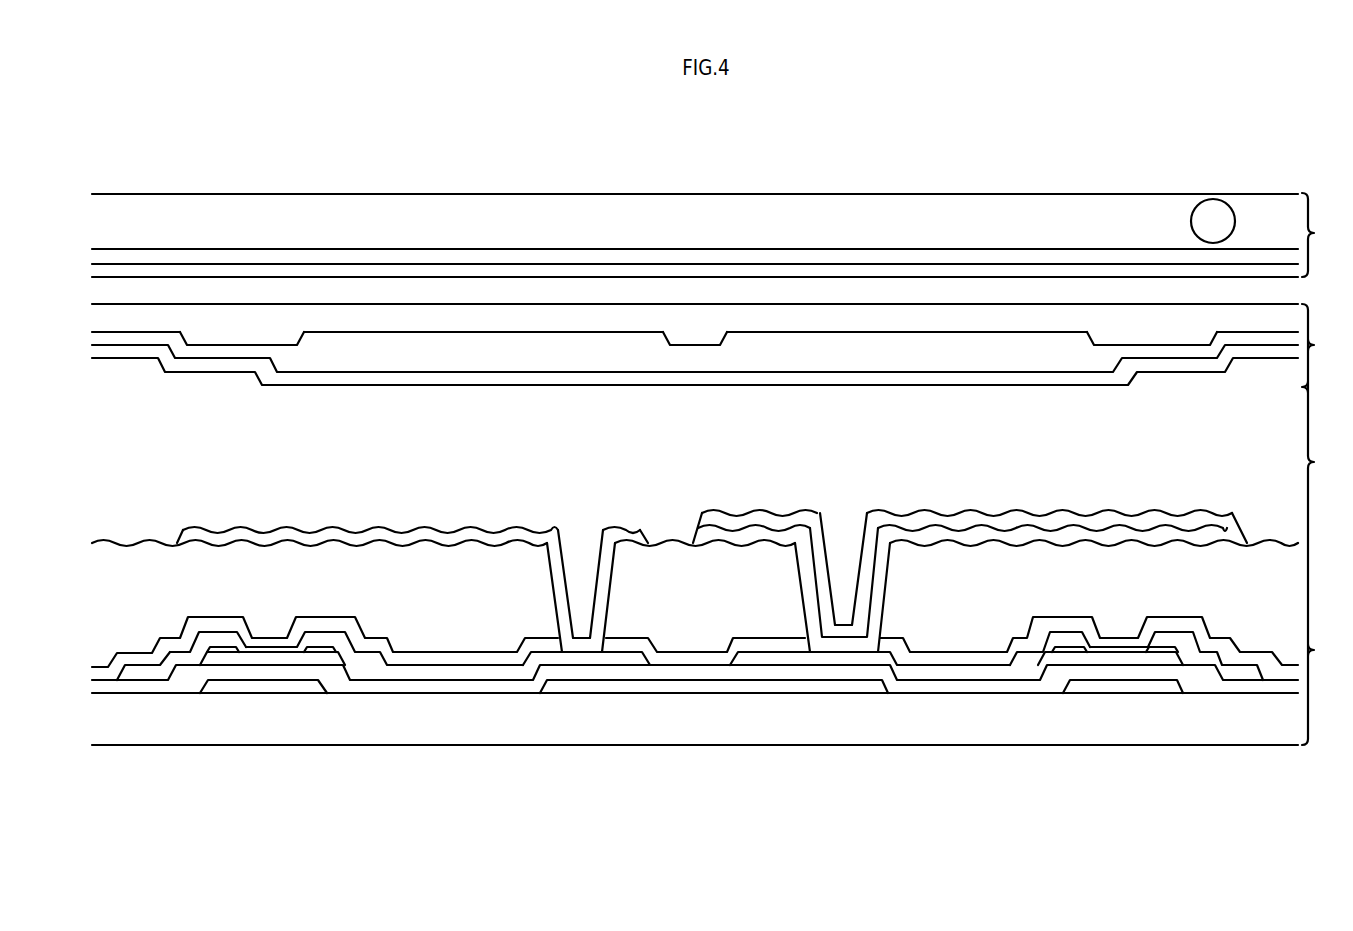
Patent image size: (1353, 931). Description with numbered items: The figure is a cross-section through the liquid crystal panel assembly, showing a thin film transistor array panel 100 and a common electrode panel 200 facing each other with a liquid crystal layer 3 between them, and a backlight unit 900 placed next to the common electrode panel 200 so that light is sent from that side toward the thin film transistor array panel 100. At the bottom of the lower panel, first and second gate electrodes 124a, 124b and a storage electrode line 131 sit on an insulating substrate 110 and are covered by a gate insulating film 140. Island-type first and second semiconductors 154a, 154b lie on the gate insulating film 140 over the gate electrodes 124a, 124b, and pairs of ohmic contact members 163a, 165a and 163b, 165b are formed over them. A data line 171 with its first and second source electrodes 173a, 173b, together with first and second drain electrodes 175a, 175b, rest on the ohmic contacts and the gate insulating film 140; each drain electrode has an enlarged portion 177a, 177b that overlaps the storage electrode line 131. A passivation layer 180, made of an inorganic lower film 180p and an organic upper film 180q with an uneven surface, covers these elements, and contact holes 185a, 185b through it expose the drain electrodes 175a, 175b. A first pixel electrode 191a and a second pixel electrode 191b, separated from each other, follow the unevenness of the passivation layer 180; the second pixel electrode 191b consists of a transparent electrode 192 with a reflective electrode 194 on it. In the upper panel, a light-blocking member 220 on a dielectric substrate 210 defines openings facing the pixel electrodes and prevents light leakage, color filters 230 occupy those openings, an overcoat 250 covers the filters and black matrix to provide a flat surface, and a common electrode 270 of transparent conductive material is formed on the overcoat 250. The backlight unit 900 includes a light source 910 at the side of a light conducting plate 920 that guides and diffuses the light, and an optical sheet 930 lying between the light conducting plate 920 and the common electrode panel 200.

The liquid crystal layer 3 is at (720, 483).
The thin film transistor array panel 100 is at (720, 627).
The insulating substrate 110 is at (614, 732).
The first gate electrode 124a is at (287, 687).
The second gate electrode 124b is at (1135, 687).
The storage electrode line 131 is at (687, 686).
The gate insulating film 140 is at (475, 686).
The first semiconductor 154a is at (252, 660).
The second semiconductor 154b is at (1100, 660).
The first ohmic contact member 163a is at (226, 652).
The second ohmic contact member 163b is at (1167, 648).
The first ohmic contact member 165a is at (323, 655).
The second ohmic contact member 165b is at (1073, 649).
The data line 171 is at (142, 674).
The first source electrode 173a is at (204, 649).
The second source electrode 173b is at (1212, 658).
The first drain electrode 175a is at (362, 658).
The second drain electrode 175b is at (1065, 637).
The enlarged portion of first drain electrode 177a is at (577, 657).
The enlarged portion of second drain electrode 177b is at (777, 657).
The passivation layer 180 is at (288, 476).
The lower passivation film 180p is at (213, 610).
The upper passivation film 180q is at (268, 565).
The contact hole 185a is at (553, 570).
The contact hole 185b is at (800, 577).
The first pixel electrode 191a is at (308, 530).
The second pixel electrode 191b is at (1068, 476).
The transparent electrode 192 is at (975, 535).
The reflective electrode 194 is at (1043, 520).
The common electrode panel 200 is at (720, 268).
The dielectric substrate 210 is at (358, 317).
The light-blocking member 220 is at (270, 338).
The color filter 230 is at (562, 340).
The overcoat 250 is at (460, 368).
The common electrode 270 is at (830, 380).
The backlight unit 900 is at (720, 212).
The light source 910 is at (1220, 199).
The light conducting plate 920 is at (1027, 215).
The optical sheet 930 is at (923, 270).